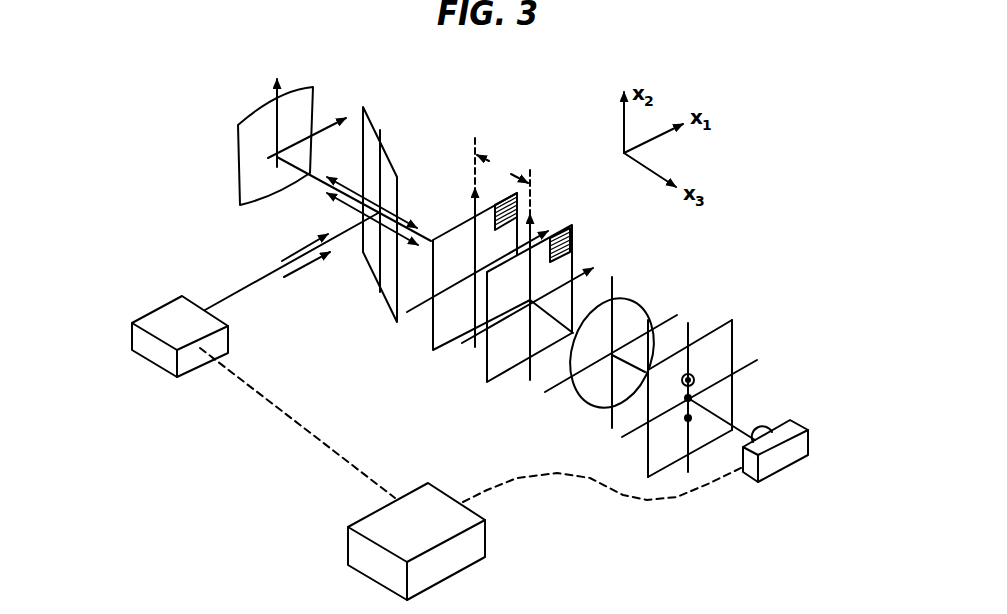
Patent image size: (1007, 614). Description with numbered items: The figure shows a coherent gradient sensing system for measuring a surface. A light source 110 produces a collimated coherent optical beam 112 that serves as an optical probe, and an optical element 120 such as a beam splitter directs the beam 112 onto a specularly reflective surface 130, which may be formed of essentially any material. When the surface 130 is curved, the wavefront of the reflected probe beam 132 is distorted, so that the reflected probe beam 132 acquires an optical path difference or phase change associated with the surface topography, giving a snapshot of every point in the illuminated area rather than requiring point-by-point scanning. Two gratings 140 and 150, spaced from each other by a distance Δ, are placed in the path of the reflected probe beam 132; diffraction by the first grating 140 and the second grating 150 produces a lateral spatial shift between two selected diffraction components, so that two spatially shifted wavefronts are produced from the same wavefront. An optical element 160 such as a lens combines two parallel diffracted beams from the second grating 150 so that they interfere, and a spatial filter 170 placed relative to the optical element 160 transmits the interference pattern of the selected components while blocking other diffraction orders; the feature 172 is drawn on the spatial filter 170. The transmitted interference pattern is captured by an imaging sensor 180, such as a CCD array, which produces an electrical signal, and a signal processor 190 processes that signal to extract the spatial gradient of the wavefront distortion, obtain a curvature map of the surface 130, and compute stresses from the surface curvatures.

The light source 110 is at (167, 317).
The collimated coherent optical beam 112 is at (281, 261).
The optical element (beam splitter) 120 is at (408, 214).
The specularly reflective surface 130 is at (302, 155).
The reflected probe beam 132 is at (393, 211).
The first grating 140 is at (483, 266).
The second grating 150 is at (559, 282).
The optical element (lens) 160 is at (601, 364).
The spatial filter 170 is at (707, 379).
The detector spots 172 is at (737, 371).
The imaging sensor 180 is at (805, 432).
The signal processor 190 is at (449, 541).